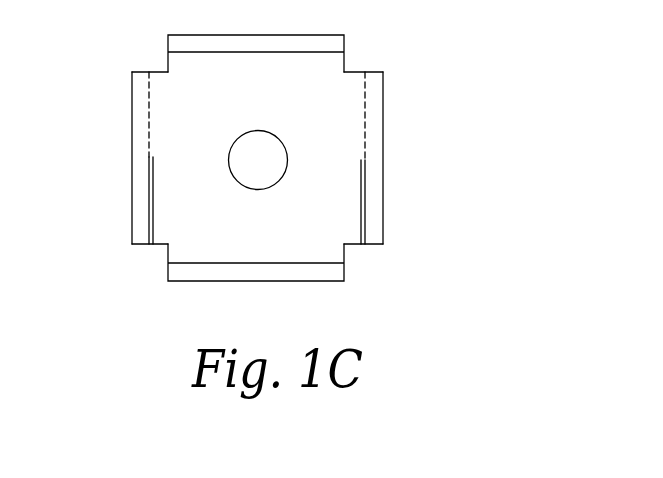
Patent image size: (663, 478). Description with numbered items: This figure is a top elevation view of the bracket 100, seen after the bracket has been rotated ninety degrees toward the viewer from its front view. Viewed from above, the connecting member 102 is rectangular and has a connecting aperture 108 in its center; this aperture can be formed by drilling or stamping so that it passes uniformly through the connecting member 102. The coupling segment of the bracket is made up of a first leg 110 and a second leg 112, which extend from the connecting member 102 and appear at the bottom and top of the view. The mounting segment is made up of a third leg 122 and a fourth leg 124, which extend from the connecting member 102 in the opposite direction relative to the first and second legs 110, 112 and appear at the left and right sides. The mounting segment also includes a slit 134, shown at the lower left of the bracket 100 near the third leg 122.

The bracket 100 is at (447, 72).
The connecting member 102 is at (260, 95).
The connecting aperture 108 is at (283, 143).
The first leg 110 is at (259, 282).
The second leg 112 is at (270, 35).
The third leg 122 is at (132, 156).
The fourth leg 124 is at (384, 157).
The slit 134 is at (151, 246).